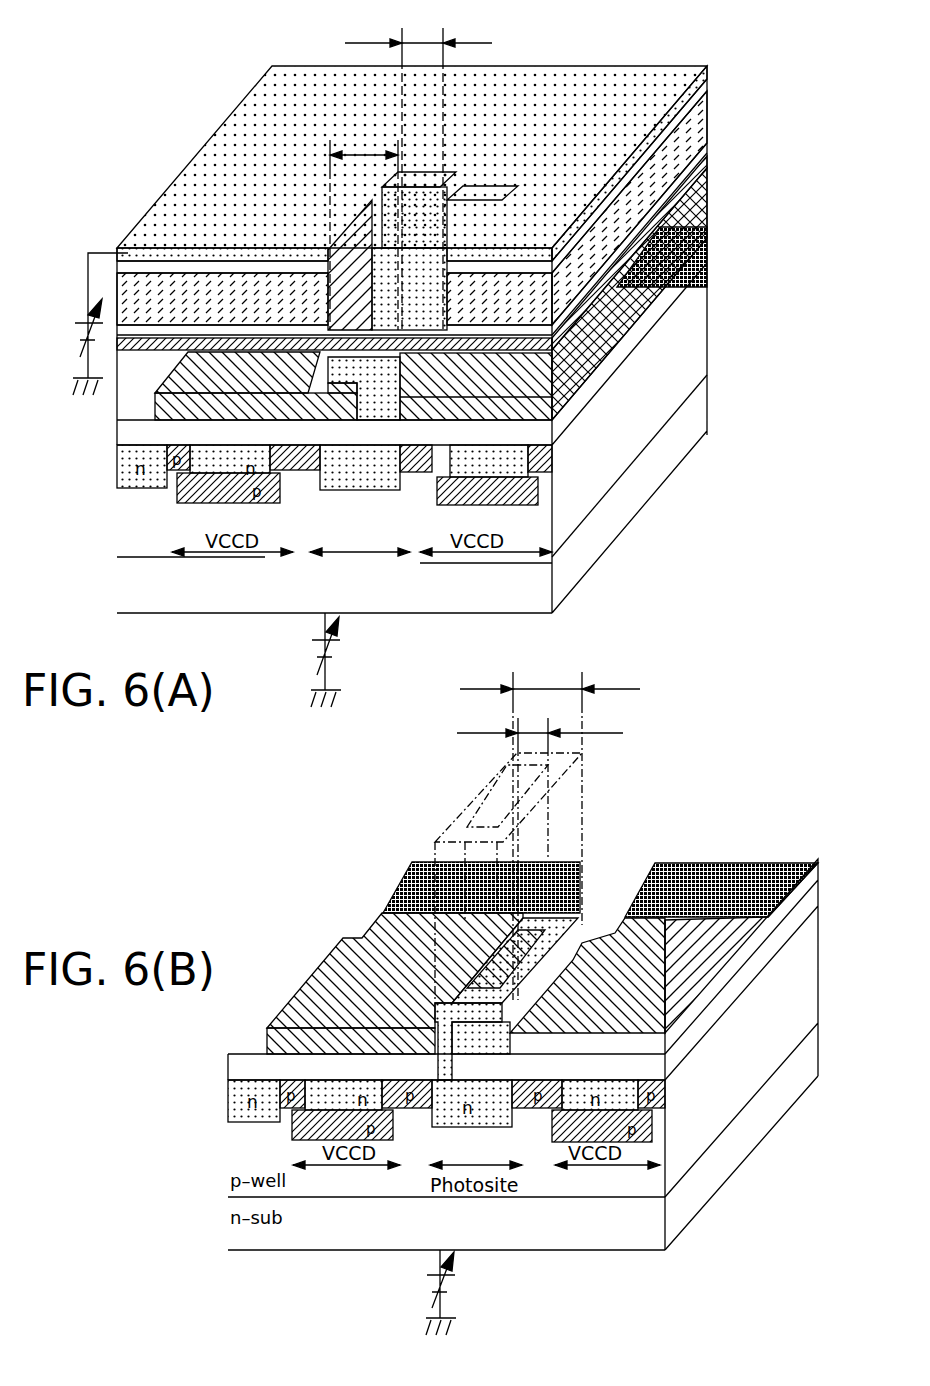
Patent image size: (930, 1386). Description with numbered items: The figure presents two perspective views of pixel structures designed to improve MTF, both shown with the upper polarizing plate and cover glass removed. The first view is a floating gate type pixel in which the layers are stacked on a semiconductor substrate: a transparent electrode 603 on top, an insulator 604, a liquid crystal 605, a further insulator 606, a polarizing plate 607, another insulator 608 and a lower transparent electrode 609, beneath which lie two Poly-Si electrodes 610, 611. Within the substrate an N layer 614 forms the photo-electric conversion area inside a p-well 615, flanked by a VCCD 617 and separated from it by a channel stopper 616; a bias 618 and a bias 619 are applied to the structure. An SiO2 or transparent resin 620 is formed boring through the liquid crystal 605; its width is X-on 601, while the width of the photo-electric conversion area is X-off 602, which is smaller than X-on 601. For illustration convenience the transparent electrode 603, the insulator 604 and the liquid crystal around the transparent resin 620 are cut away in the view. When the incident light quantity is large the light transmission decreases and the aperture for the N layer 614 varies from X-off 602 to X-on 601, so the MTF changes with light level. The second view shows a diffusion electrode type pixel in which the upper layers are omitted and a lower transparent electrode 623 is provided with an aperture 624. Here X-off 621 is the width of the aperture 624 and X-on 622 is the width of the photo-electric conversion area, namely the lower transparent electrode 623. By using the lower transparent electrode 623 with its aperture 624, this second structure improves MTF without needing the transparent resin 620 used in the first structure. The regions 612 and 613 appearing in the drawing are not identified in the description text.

The X-on 601 is at (426, 43).
The X-off 602 is at (363, 153).
The transparent electrode 603 is at (708, 74).
The insulator 604 is at (710, 95).
The liquid crystal 605 is at (707, 135).
The insulator 606 is at (707, 160).
The polarizing plate 607 is at (705, 178).
The insulator 608 is at (705, 210).
The transparent electrode 609 is at (357, 378).
The Poly-Si electrode 610 is at (623, 300).
The Poly-Si electrode 611 is at (698, 252).
The substrate 612 is at (620, 357).
The photosite 613 is at (336, 569).
The N layer 614 is at (345, 486).
The p-well 615 is at (326, 550).
The channel stopper 616 is at (290, 474).
The VCCD 617 is at (545, 470).
The bias 618 is at (348, 660).
The bias 619 is at (75, 336).
The transparent resin 620 is at (415, 215).
The X-off 621 is at (550, 689).
The X-on 622 is at (535, 735).
The lower transparent electrode 623 is at (572, 900).
The aperture 624 is at (535, 935).